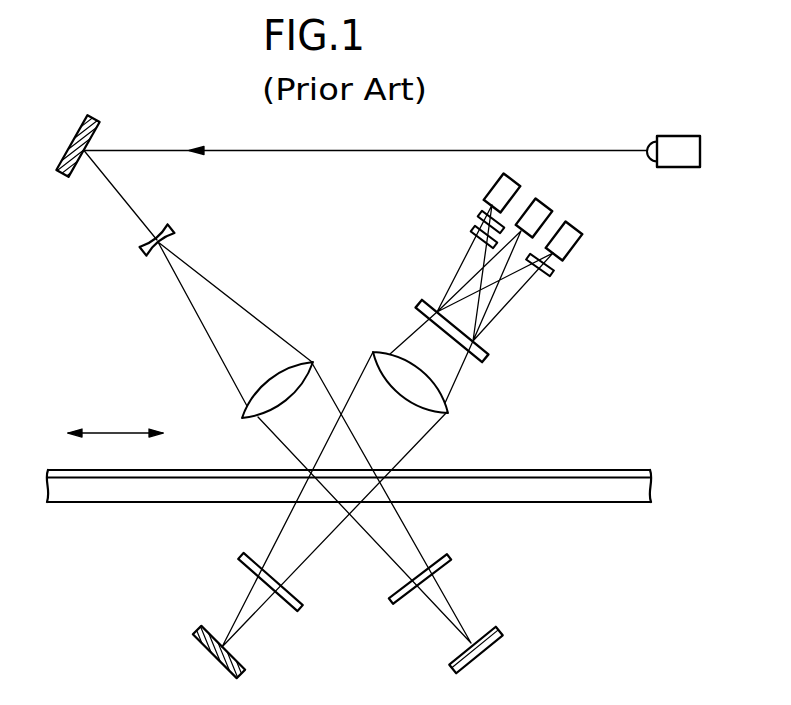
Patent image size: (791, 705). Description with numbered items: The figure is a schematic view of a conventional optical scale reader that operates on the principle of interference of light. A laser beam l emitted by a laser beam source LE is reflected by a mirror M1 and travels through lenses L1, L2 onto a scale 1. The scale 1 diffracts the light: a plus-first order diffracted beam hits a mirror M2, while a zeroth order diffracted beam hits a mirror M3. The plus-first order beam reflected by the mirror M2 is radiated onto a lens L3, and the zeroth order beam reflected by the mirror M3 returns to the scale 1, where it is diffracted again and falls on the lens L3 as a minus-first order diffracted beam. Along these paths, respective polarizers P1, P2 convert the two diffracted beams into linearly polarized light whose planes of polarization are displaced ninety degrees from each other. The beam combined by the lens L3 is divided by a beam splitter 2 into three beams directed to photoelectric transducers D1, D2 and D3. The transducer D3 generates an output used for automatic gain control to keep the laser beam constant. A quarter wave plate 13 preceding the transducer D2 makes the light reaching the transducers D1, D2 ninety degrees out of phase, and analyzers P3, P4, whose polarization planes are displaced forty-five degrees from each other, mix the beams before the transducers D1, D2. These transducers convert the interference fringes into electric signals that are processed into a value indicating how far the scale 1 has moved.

The laser beam source LE is at (678, 136).
The laser beam l is at (365, 142).
The mirror M1 is at (63, 174).
The mirror M2 is at (200, 650).
The mirror M3 is at (485, 658).
The lens L1 is at (142, 247).
The lens L2 is at (243, 408).
The lens L3 is at (440, 403).
The polarizer P1 is at (237, 560).
The polarizer P2 is at (400, 601).
The analyzer P3 is at (548, 273).
The analyzer P4 is at (478, 213).
The photoelectric transducer D1 is at (572, 224).
The photoelectric transducer D2 is at (517, 177).
The photoelectric transducer D3 is at (548, 200).
The scale 1 is at (578, 502).
The beam splitter 2 is at (490, 360).
The quarter wave plate 13 is at (473, 232).